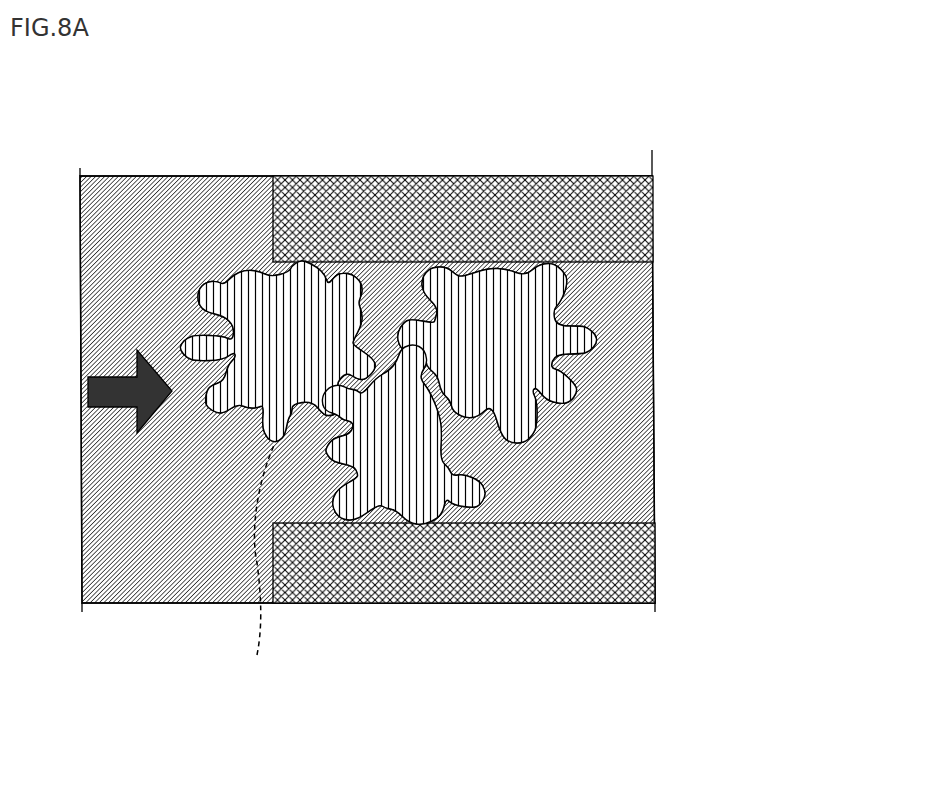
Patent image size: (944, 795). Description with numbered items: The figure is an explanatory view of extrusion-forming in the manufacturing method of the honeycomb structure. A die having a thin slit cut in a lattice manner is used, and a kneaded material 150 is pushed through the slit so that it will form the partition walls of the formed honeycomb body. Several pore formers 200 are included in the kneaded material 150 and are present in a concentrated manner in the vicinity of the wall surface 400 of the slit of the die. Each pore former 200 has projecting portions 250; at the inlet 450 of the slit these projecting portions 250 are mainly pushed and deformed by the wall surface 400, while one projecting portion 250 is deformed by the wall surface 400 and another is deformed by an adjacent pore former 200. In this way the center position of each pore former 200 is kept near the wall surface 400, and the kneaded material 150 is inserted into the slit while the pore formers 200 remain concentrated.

The kneaded material 150 is at (153, 511).
The pore former 200 is at (272, 337).
The projecting portion 250 is at (283, 270).
The wall surface 400 is at (578, 262).
The inlet 450 is at (242, 561).